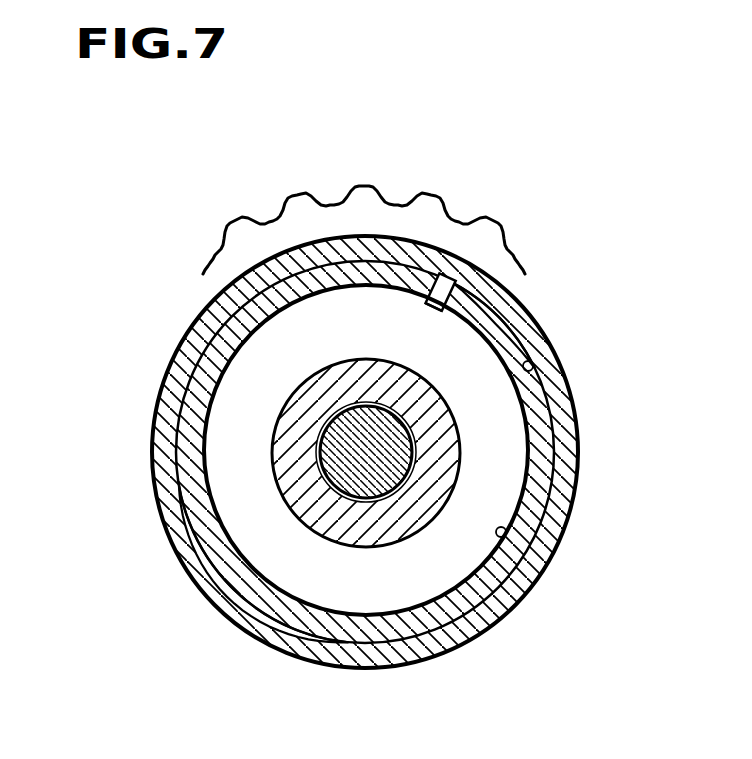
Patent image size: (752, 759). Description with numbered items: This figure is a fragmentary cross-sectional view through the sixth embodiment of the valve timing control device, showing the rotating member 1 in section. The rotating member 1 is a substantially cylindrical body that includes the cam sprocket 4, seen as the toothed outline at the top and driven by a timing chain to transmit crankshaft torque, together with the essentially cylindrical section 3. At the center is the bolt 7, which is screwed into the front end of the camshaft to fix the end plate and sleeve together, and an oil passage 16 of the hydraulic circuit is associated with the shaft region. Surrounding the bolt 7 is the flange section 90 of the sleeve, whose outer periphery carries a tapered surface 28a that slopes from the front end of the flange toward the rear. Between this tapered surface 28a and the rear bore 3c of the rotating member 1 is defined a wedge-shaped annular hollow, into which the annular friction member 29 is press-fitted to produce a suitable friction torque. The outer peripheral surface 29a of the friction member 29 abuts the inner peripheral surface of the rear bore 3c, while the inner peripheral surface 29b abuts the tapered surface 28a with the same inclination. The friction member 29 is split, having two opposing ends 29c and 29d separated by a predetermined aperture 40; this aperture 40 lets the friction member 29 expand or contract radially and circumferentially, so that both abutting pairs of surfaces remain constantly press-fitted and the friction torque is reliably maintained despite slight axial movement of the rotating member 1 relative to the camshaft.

The rotating member 1 is at (250, 187).
The cylindrical section 3 is at (532, 316).
The rear bore 3c is at (533, 366).
The cam sprocket 4 is at (353, 183).
The bolt 7 is at (338, 460).
The oil passage 16 is at (343, 408).
The tapered surface 28a is at (530, 460).
The friction member 29 is at (507, 612).
The outer peripheral surface 29a is at (550, 507).
The inner peripheral surface 29b is at (530, 550).
The end of friction member 29c is at (477, 300).
The end of friction member 29d is at (437, 268).
The aperture 40 is at (450, 287).
The flange section 90 is at (503, 412).